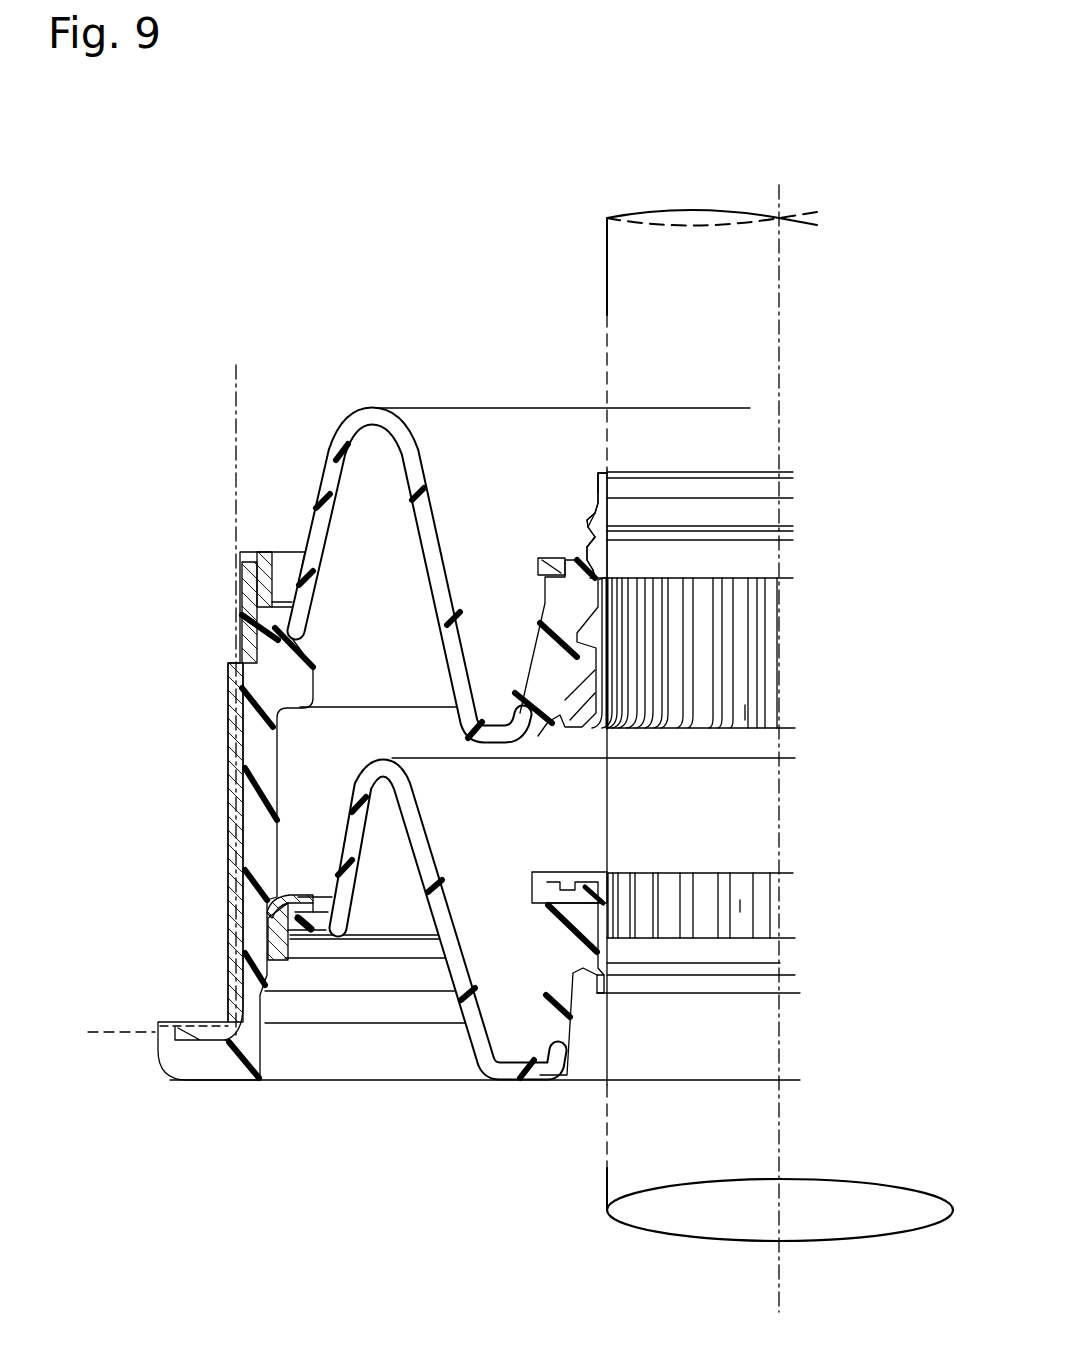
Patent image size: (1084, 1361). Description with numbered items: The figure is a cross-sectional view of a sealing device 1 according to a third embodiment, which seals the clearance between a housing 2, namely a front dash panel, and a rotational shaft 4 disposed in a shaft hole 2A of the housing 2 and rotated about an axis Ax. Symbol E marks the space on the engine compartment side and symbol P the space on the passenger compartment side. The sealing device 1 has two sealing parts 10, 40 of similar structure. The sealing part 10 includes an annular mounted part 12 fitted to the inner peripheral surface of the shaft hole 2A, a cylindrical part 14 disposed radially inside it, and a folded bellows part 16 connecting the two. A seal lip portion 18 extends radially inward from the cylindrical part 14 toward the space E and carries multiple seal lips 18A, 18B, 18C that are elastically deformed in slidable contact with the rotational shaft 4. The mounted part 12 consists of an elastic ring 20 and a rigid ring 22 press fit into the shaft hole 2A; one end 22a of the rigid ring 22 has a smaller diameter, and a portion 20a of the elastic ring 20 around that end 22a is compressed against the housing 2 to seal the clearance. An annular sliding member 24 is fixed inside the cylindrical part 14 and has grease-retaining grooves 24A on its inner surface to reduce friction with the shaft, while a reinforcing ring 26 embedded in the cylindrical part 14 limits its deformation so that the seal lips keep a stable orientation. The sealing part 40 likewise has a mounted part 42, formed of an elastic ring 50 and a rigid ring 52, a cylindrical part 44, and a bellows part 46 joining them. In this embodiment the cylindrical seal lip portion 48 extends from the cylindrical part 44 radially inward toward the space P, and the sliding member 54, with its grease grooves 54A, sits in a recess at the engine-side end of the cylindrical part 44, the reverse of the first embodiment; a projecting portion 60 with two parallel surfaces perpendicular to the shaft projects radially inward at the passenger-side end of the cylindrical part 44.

The sealing device 1 is at (318, 236).
The sealing part 10 is at (420, 336).
The mounted part 12 is at (262, 652).
The cylindrical part 14 is at (532, 662).
The bellows part 16 is at (333, 440).
The seal lip portion 18 is at (598, 473).
The seal lip 18A is at (604, 490).
The seal lip 18B is at (607, 527).
The seal lip 18C is at (613, 540).
The elastic ring 20 is at (262, 692).
The portion of the elastic ring 20a is at (262, 617).
The rigid ring 22 is at (243, 722).
The end of the rigid ring 22a is at (245, 580).
The sliding member 24 is at (612, 593).
The grooves 24A is at (652, 704).
The reinforcing ring 26 is at (548, 557).
The housing 2 is at (123, 1036).
The shaft hole 2A is at (237, 470).
The rotational shaft 4 is at (605, 255).
The axis Ax is at (779, 272).
The space on the engine compartment side E is at (573, 165).
The space on the passenger compartment side P is at (572, 1277).
The sealing part 40 is at (380, 1040).
The mounted part 42 is at (268, 942).
The cylindrical part 44 is at (545, 935).
The bellows part 46 is at (350, 796).
The seal lip portion 48 is at (606, 990).
The elastic ring 50 is at (315, 931).
The rigid ring 52 is at (270, 912).
The sliding member 54 is at (612, 885).
The grooves 54A is at (758, 930).
The projecting portion 60 is at (580, 882).